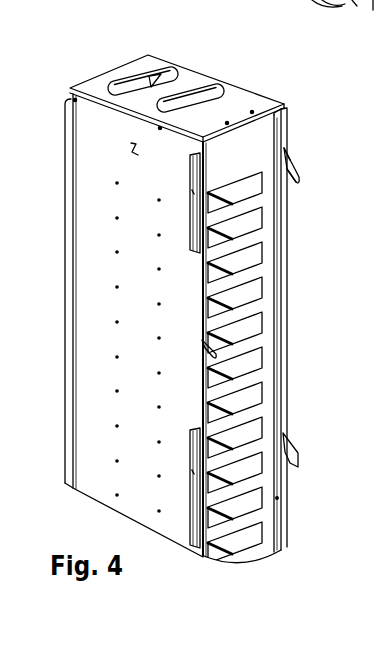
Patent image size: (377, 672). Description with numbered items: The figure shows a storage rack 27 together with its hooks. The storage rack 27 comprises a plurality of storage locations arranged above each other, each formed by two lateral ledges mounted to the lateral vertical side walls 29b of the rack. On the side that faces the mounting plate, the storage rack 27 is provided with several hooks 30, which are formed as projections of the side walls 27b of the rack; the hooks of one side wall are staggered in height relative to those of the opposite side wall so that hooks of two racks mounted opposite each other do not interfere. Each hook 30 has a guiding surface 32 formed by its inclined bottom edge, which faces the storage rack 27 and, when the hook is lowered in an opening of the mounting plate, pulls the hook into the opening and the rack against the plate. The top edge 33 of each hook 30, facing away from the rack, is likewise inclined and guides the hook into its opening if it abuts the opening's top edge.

The storage rack 27 is at (110, 52).
The side wall 27b is at (92, 492).
The lateral vertical side wall 29b is at (361, 0).
The hook 30 is at (291, 172).
The guiding surface 32 is at (290, 178).
The top edge 33 is at (287, 156).